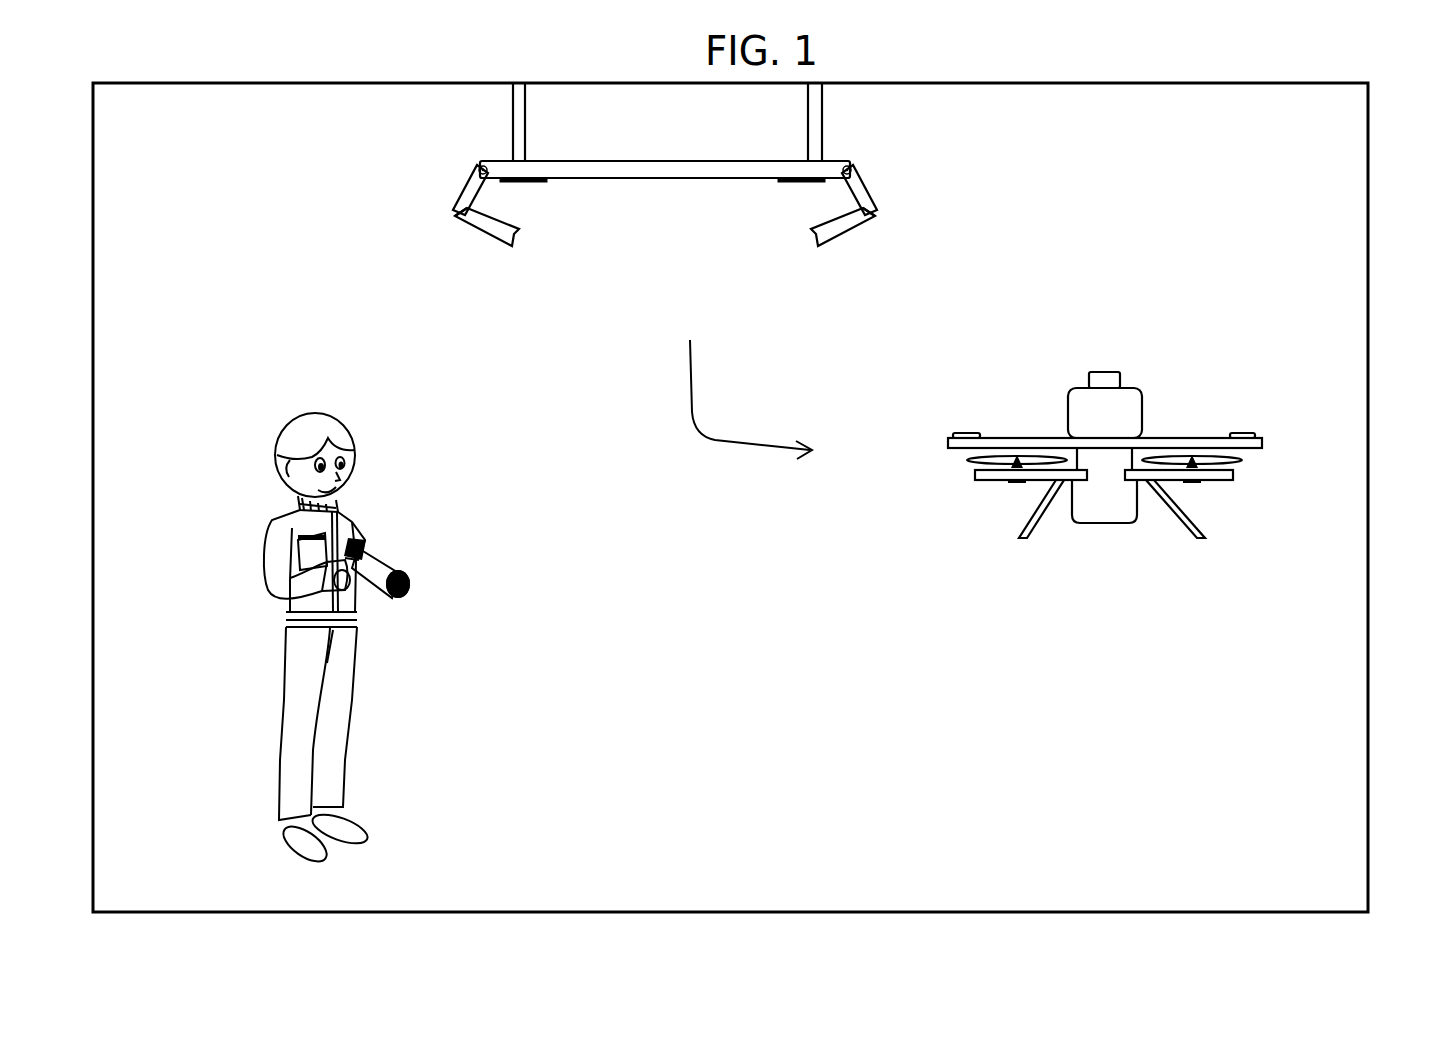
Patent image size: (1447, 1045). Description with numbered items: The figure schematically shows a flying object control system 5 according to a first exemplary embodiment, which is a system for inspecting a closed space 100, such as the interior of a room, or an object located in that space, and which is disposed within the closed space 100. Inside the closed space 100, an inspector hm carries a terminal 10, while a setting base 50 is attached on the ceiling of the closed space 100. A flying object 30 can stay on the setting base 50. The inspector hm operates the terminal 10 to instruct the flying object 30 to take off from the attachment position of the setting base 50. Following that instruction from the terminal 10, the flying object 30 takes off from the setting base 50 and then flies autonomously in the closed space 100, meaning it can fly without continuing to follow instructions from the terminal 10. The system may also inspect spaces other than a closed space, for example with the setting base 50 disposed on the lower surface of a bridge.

The closed space 100 is at (1369, 722).
The flying object control system 5 is at (325, 328).
The setting base 50 is at (458, 197).
The flying object 30 is at (1142, 432).
The terminal 10 is at (412, 568).
The inspector hm is at (278, 570).